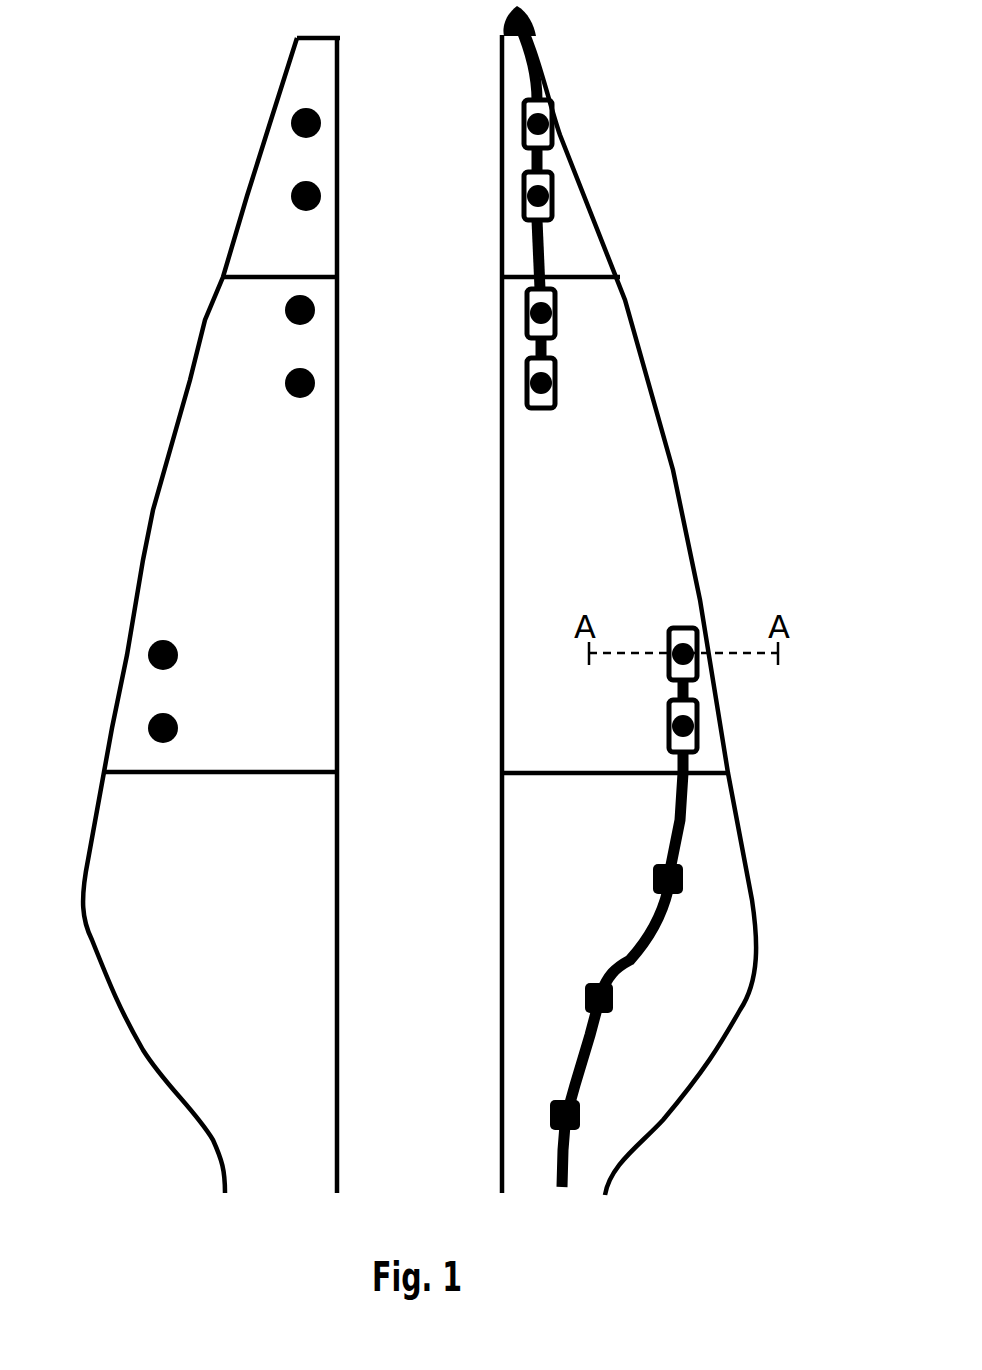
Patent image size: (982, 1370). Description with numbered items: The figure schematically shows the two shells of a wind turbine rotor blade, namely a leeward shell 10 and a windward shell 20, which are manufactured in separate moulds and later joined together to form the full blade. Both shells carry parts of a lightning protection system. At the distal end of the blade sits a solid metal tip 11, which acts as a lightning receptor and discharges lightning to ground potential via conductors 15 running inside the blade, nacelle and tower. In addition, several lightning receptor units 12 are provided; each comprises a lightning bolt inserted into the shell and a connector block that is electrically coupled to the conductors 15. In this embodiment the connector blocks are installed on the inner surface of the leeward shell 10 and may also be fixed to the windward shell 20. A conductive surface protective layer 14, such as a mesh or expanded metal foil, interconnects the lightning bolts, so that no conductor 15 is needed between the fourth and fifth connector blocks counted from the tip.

The leeward shell 10 is at (584, 600).
The solid metal tip 11 is at (510, 22).
The lightning receptor unit 12 is at (523, 187).
The surface protective layer 14 is at (196, 478).
The conductor 15 is at (543, 253).
The windward shell 20 is at (200, 615).